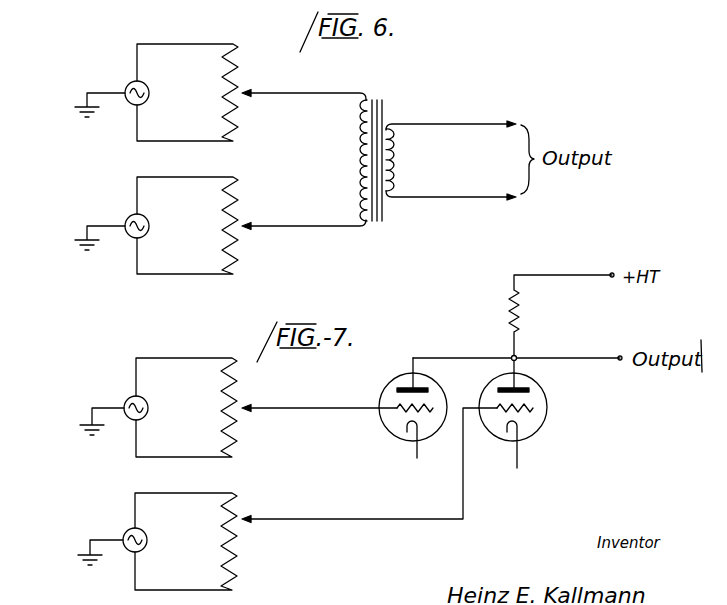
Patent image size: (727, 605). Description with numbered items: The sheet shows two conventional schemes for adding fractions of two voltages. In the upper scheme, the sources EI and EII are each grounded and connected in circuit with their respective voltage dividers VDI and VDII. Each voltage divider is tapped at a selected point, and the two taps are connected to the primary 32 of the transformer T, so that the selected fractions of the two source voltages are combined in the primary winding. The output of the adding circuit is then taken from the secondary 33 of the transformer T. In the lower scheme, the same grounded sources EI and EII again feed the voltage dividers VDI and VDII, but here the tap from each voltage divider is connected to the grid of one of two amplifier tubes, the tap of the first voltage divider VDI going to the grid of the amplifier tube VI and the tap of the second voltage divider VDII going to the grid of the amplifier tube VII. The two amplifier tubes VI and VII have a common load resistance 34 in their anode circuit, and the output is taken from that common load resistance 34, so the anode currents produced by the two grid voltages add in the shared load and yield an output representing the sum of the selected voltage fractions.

In FIG. 6, the source EI is at (126, 102).
In FIG. 7, the source EI is at (149, 407).
In FIG. 6, the source EII is at (128, 237).
In FIG. 7, the source EII is at (149, 538).
In FIG. 6, the voltage divider VDI is at (240, 65).
In FIG. 7, the voltage divider VDI is at (241, 381).
In FIG. 6, the voltage divider VDII is at (240, 240).
In FIG. 7, the voltage divider VDII is at (243, 561).
In FIG. 6, the transformer T is at (372, 151).
In FIG. 6, the primary 32 is at (356, 150).
In FIG. 6, the secondary 33 is at (398, 160).
In FIG. 7, the common load resistance 34 is at (507, 318).
In FIG. 7, the amplifier tube VI is at (391, 383).
In FIG. 7, the amplifier tube VII is at (547, 418).